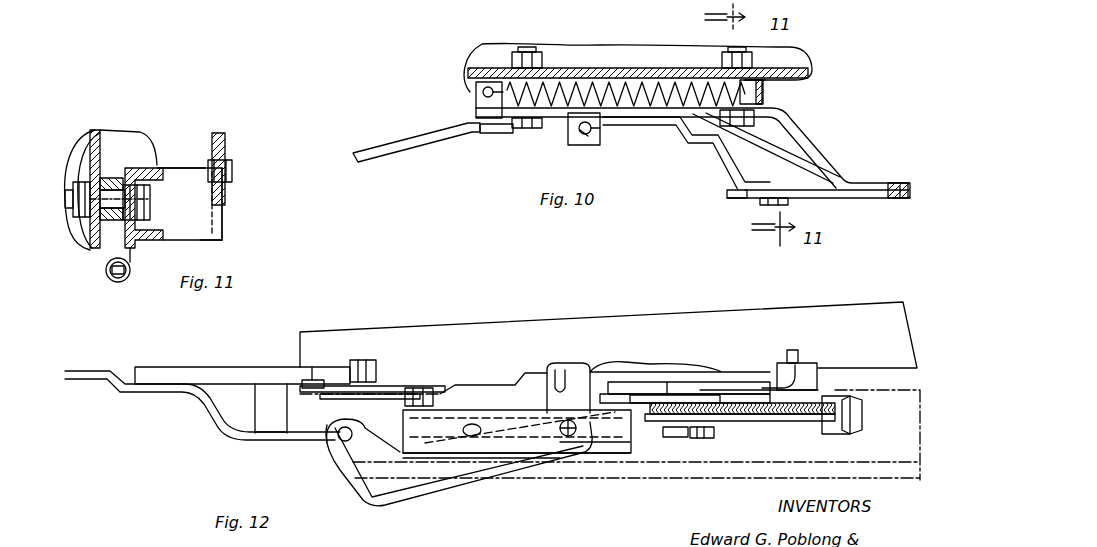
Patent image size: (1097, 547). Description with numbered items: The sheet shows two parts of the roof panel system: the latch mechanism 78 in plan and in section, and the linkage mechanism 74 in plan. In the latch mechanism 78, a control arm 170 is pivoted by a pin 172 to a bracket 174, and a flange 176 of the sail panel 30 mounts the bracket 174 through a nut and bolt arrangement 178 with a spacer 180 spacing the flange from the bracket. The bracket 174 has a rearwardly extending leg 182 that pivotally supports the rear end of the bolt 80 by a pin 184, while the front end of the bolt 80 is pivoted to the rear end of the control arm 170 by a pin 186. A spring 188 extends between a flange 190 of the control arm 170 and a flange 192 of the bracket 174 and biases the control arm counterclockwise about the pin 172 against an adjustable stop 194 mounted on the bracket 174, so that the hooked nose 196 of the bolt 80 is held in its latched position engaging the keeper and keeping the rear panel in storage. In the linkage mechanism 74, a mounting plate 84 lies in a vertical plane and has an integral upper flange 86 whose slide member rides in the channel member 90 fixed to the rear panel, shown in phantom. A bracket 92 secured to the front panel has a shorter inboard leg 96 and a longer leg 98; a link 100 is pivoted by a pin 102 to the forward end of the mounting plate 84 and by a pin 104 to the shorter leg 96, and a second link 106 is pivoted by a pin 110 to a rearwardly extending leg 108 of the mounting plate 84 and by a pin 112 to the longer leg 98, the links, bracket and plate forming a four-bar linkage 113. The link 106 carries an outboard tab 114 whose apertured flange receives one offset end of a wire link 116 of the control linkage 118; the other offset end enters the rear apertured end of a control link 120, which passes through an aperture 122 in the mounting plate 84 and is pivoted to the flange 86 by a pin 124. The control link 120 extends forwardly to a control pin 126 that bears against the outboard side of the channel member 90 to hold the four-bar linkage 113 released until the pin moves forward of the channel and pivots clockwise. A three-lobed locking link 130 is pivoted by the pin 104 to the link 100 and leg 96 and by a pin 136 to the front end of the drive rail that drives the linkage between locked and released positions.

In FIG. 10, the sail panel 30 is at (778, 68).
In FIG. 11, the sail panel 30 is at (82, 240).
In FIG. 12, the linkage mechanism 74 is at (518, 366).
In FIG. 10, the latch mechanism 78 is at (835, 73).
In FIG. 11, the latch mechanism 78 is at (234, 134).
In FIG. 10, the bolt 80 is at (805, 195).
In FIG. 11, the bolt 80 is at (228, 190).
In FIG. 12, the mounting plate 84 is at (488, 410).
In FIG. 12, the upper flange 86 is at (418, 455).
In FIG. 12, the channel member 90 is at (434, 462).
In FIG. 12, the bracket 92 is at (150, 392).
In FIG. 12, the inboard leg 96 is at (235, 368).
In FIG. 12, the longer leg 98 is at (640, 445).
In FIG. 12, the link 100 is at (386, 386).
In FIG. 12, the pin 102 is at (420, 388).
In FIG. 12, the pin 104 is at (362, 360).
In FIG. 12, the second link 106 is at (720, 414).
In FIG. 12, the rearwardly extending leg 108 is at (808, 421).
In FIG. 12, the pin 110 is at (852, 425).
In FIG. 12, the pin 112 is at (678, 440).
In FIG. 12, the four-bar linkage 113 is at (708, 450).
In FIG. 12, the tab 114 is at (815, 372).
In FIG. 12, the wire link 116 is at (770, 380).
In FIG. 12, the control linkage 118 is at (580, 356).
In FIG. 12, the control link 120 is at (470, 480).
In FIG. 12, the aperture 122 is at (592, 380).
In FIG. 12, the pin 124 is at (566, 437).
In FIG. 12, the control pin 126 is at (328, 444).
In FIG. 12, the locking link 130 is at (305, 385).
In FIG. 12, the pin 136 is at (318, 380).
In FIG. 10, the control arm 170 is at (400, 154).
In FIG. 11, the control arm 170 is at (195, 168).
In FIG. 10, the pin 172 is at (492, 134).
In FIG. 10, the bracket 174 is at (706, 138).
In FIG. 11, the bracket 174 is at (170, 168).
In FIG. 10, the flange 176 is at (645, 75).
In FIG. 11, the flange 176 is at (95, 130).
In FIG. 10, the nut and bolt arrangement 178 is at (527, 128).
In FIG. 11, the nut and bolt arrangement 178 is at (80, 182).
In FIG. 10, the spacer 180 is at (515, 78).
In FIG. 11, the spacer 180 is at (112, 178).
In FIG. 10, the rearwardly extending leg 182 is at (822, 166).
In FIG. 11, the rearwardly extending leg 182 is at (222, 222).
In FIG. 10, the pin 184 is at (900, 200).
In FIG. 10, the pin 186 is at (765, 205).
In FIG. 11, the pin 186 is at (232, 172).
In FIG. 10, the spring 188 is at (585, 75).
In FIG. 11, the spring 188 is at (112, 280).
In FIG. 10, the flange 190 is at (476, 98).
In FIG. 10, the flange 192 is at (765, 92).
In FIG. 11, the flange 192 is at (135, 255).
In FIG. 10, the adjustable stop 194 is at (590, 145).
In FIG. 10, the hooked nose 196 is at (745, 198).